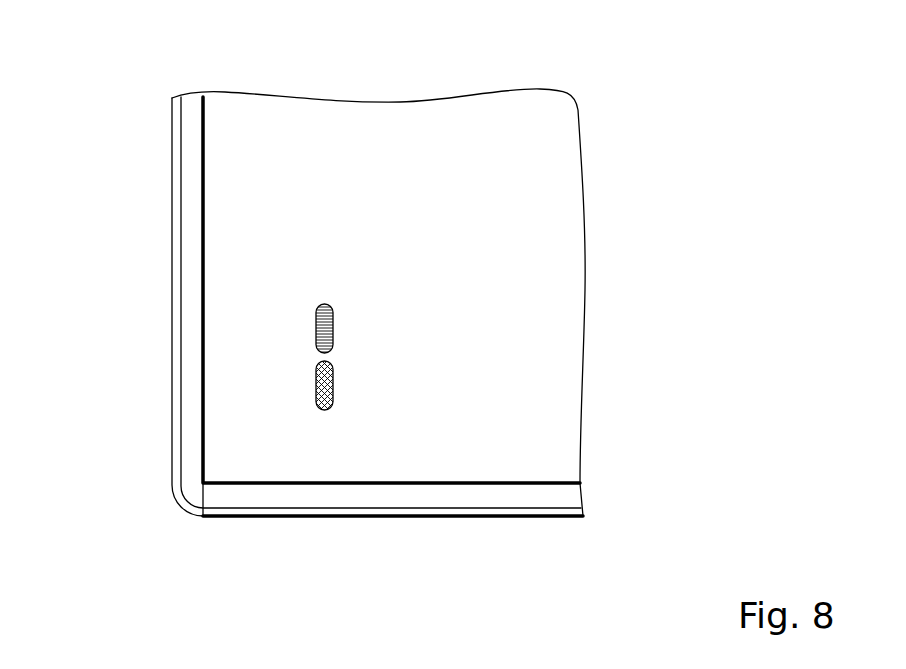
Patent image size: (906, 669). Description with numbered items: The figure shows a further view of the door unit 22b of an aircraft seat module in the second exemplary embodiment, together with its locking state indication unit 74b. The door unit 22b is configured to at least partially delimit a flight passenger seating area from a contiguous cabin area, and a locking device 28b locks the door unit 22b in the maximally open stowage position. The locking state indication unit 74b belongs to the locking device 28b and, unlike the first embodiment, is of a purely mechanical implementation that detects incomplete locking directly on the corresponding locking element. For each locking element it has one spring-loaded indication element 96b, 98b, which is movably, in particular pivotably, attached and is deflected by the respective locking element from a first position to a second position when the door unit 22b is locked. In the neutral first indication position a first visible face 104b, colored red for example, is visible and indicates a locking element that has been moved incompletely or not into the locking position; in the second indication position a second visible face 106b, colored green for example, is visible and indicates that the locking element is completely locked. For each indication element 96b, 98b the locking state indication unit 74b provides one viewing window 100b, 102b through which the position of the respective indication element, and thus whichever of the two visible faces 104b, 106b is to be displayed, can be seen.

The door unit 22b is at (522, 184).
The locking device 28b is at (270, 358).
The spring-loaded indication element 96b is at (316, 318).
The second visible face 106b is at (316, 340).
The viewing window 100b is at (324, 296).
The spring-loaded indication element 98b is at (333, 370).
The first visible face 104b is at (333, 388).
The viewing window 102b is at (324, 418).
The locking state indication unit 74b is at (283, 396).